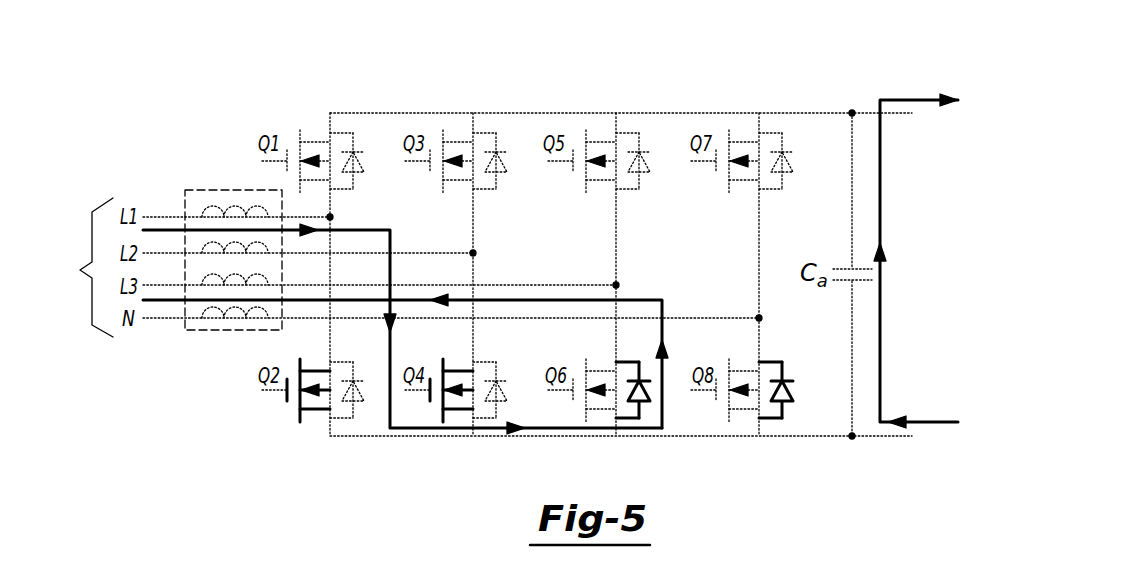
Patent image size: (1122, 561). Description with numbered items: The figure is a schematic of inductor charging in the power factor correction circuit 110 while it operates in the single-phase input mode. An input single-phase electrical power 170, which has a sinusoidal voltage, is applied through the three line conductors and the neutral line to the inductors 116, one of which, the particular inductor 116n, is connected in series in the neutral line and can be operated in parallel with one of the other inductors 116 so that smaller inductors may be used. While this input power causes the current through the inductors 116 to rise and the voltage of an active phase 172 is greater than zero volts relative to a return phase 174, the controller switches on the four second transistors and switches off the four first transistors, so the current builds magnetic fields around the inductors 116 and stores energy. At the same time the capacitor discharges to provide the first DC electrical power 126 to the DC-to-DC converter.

The power factor correction circuit 110 is at (291, 57).
The inductors 116 is at (212, 190).
The particular inductor 116n is at (223, 318).
The first DC electrical power 126 is at (918, 100).
The input single-phase electrical power 170 is at (78, 267).
The active phase 172 is at (355, 228).
The return phase 174 is at (648, 298).